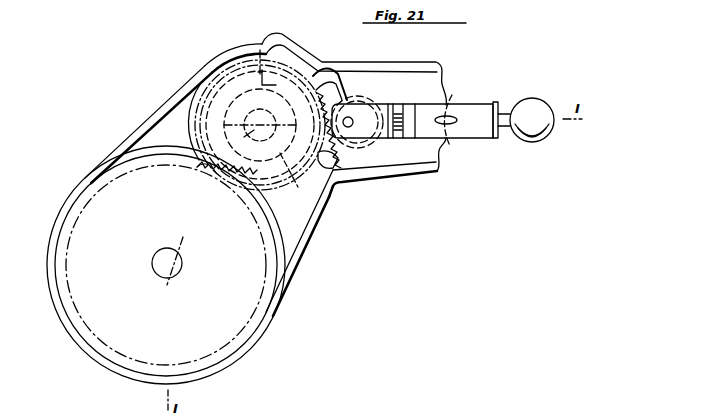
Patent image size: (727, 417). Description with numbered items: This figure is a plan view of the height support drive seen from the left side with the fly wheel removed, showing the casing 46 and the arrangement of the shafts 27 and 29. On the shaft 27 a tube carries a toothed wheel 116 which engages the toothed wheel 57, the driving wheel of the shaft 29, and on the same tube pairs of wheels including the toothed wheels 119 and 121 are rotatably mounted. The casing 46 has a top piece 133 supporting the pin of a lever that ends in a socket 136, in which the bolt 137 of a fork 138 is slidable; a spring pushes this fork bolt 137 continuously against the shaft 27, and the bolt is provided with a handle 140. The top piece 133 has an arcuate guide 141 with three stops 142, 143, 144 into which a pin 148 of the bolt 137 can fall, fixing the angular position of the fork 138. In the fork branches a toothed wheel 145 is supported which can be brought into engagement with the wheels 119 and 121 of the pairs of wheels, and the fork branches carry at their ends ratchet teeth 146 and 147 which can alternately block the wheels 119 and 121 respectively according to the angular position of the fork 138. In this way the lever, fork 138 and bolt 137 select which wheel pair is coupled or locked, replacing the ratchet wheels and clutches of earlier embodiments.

The shaft 27 is at (198, 135).
The shaft 29 is at (178, 269).
The casing 46 is at (156, 119).
The toothed wheel 57 is at (92, 331).
The toothed wheel 116 is at (283, 190).
The toothed wheel 119 is at (257, 62).
The toothed wheel 121 is at (266, 68).
The top piece 133 is at (410, 176).
The socket 136 is at (489, 106).
The bolt 137 is at (398, 134).
The fork 138 is at (362, 132).
The handle 140 is at (541, 104).
The housing slot edge 141 is at (447, 73).
The stop 142 is at (464, 137).
The stop 143 is at (449, 105).
The stop 144 is at (446, 143).
The toothed wheel 145 is at (369, 96).
The ratchet teeth 146 is at (328, 82).
The ratchet teeth 147 is at (337, 177).
The pin 148 is at (437, 118).